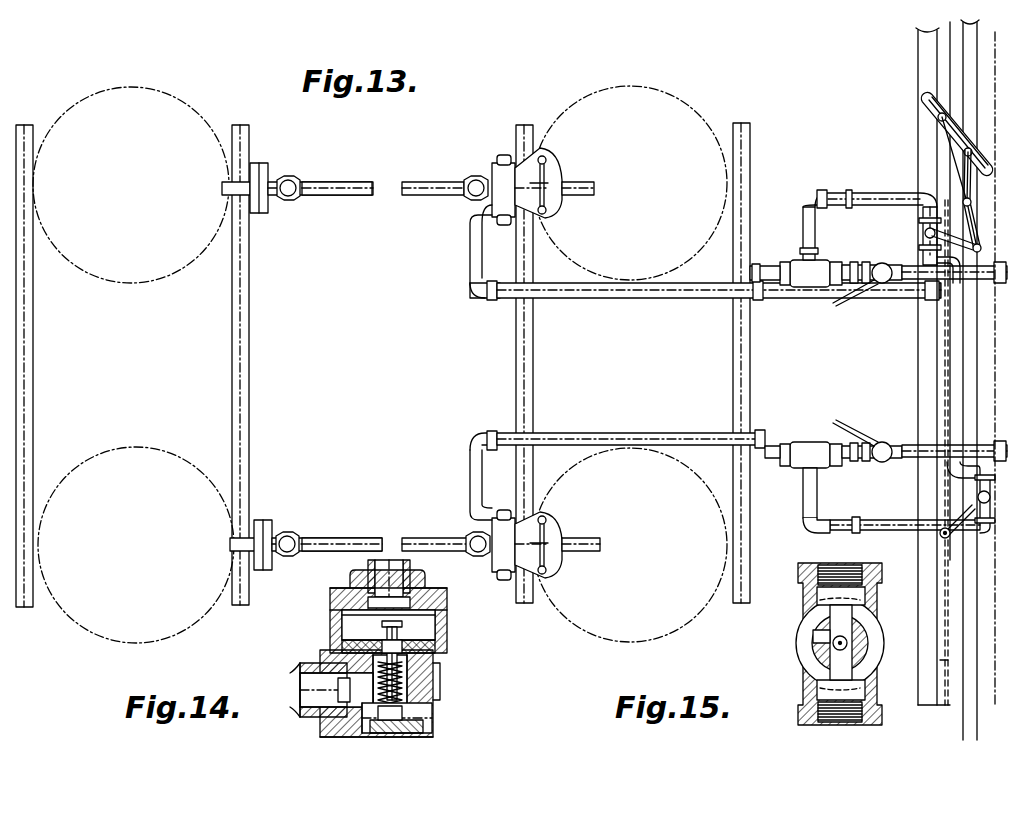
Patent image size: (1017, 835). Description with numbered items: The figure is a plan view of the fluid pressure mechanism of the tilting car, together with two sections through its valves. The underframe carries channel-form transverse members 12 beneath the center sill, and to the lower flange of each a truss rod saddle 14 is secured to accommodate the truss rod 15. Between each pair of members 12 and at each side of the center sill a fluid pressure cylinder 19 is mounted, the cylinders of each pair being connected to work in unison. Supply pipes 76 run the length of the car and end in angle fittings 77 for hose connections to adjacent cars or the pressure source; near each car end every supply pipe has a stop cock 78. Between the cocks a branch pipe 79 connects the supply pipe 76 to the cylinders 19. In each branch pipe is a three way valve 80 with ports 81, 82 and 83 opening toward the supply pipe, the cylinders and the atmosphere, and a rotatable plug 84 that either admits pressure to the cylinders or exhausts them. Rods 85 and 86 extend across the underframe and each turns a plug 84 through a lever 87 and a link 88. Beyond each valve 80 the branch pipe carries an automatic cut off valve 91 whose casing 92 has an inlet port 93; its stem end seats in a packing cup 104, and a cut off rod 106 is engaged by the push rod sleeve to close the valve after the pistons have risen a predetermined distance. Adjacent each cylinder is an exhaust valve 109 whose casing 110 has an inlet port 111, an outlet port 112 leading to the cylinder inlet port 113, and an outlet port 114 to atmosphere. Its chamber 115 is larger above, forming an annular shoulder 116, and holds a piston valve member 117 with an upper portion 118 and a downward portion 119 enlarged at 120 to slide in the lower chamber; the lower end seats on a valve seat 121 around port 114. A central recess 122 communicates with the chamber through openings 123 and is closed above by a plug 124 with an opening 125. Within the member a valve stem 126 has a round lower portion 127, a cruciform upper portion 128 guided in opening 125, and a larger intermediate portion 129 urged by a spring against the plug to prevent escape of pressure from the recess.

In FIG. 13, the transverse member 12 is at (22, 381).
In FIG. 13, the fluid pressure cylinder 19 is at (152, 130).
In FIG. 13, the truss rod saddle 14 is at (260, 530).
In FIG. 13, the truss rod 15 is at (1006, 498).
In FIG. 13, the fluid pressure supply pipe 76 is at (790, 262).
In FIG. 13, the angle fitting 77 is at (998, 270).
In FIG. 13, the stop cock 78 is at (870, 265).
In FIG. 13, the branch pipe 79 is at (410, 190).
In FIG. 14, the branch pipe 79 is at (368, 566).
In FIG. 13, the three way valve 80 is at (927, 230).
In FIG. 15, the three way valve 80 is at (830, 600).
In FIG. 15, the port 81 is at (806, 708).
In FIG. 15, the port 82 is at (840, 573).
In FIG. 15, the port 83 is at (808, 648).
In FIG. 15, the rotatable plug 84 is at (838, 658).
In FIG. 15, the rod 85 is at (946, 668).
In FIG. 13, the rod 86 is at (970, 82).
In FIG. 13, the lever 87 is at (975, 246).
In FIG. 13, the link 88 is at (940, 117).
In FIG. 13, the automatic cut off valve 91 is at (548, 172).
In FIG. 13, the casing 92 is at (552, 183).
In FIG. 13, the inlet port 93 is at (503, 222).
In FIG. 13, the packing cup 104 is at (590, 192).
In FIG. 13, the cut off rod 106 is at (560, 192).
In FIG. 13, the exhaust valve 109 is at (287, 200).
In FIG. 14, the exhaust valve 109 is at (440, 592).
In FIG. 14, the casing 110 is at (352, 578).
In FIG. 14, the inlet port 111 is at (420, 590).
In FIG. 14, the outlet port 112 is at (330, 705).
In FIG. 13, the inlet port 113 is at (224, 188).
In FIG. 14, the outlet port 114 is at (420, 730).
In FIG. 14, the chamber 115 is at (345, 615).
In FIG. 14, the annular shoulder 116 is at (410, 680).
In FIG. 14, the piston valve member 117 is at (447, 646).
In FIG. 14, the upper portion 118 is at (345, 660).
In FIG. 14, the portion 119 is at (420, 700).
In FIG. 14, the increased diameter portion 120 is at (340, 722).
In FIG. 14, the valve seat 121 is at (366, 730).
In FIG. 14, the recess 122 is at (390, 720).
In FIG. 14, the openings 123 is at (432, 712).
In FIG. 14, the plug 124 is at (398, 633).
In FIG. 14, the opening 125 is at (402, 623).
In FIG. 14, the valve stem 126 is at (382, 628).
In FIG. 14, the lower portion 127 is at (338, 688).
In FIG. 14, the upper portion 128 is at (343, 646).
In FIG. 14, the intermediate portion 129 is at (436, 662).